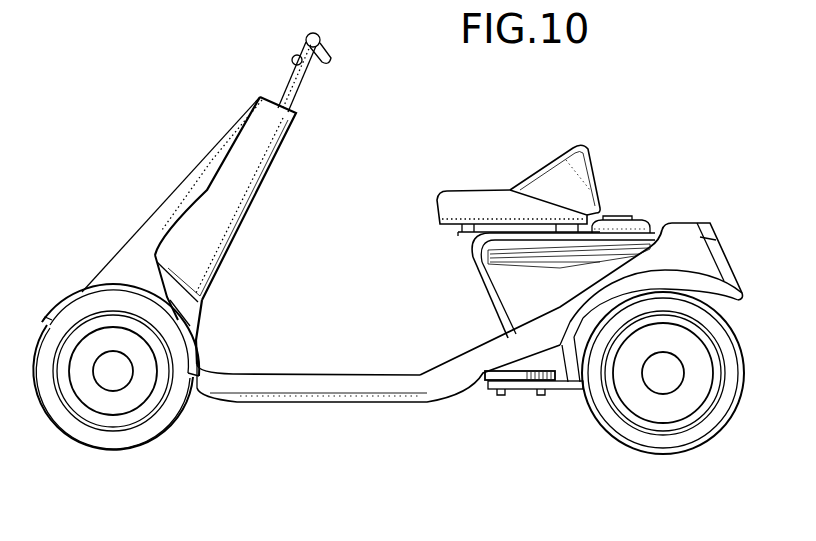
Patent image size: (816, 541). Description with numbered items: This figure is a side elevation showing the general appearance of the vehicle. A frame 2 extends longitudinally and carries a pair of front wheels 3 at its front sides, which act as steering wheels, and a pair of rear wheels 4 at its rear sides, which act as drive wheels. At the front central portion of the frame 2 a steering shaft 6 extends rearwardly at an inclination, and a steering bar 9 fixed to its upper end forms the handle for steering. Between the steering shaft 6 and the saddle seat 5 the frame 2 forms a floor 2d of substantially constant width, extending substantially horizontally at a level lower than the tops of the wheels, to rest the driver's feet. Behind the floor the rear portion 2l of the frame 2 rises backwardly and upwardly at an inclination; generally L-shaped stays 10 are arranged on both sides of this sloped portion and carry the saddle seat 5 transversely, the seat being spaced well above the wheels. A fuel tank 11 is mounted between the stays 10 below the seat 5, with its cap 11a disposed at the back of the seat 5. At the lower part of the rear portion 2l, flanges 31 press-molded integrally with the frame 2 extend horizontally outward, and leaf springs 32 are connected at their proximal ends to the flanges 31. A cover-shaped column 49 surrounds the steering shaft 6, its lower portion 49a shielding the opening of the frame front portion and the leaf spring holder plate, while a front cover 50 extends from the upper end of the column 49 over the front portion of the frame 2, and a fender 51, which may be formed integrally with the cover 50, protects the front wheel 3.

The frame 2 is at (298, 383).
The floor 2d is at (316, 375).
The rear portion of frame 2l is at (547, 315).
The front wheel 3 is at (135, 442).
The rear wheel 4 is at (688, 440).
The saddle seat 5 is at (483, 200).
The steering shaft 6 is at (295, 83).
The steering bar 9 is at (330, 42).
The L-shaped stay 10 is at (478, 273).
The fuel tank 11 is at (643, 221).
The cap 11a is at (615, 217).
The flange 31 is at (517, 383).
The leaf spring 32 is at (570, 389).
The cover-shaped column 49 is at (253, 168).
The lower portion of column 49a is at (180, 303).
The front cover 50 is at (205, 170).
The fender 51 is at (82, 296).